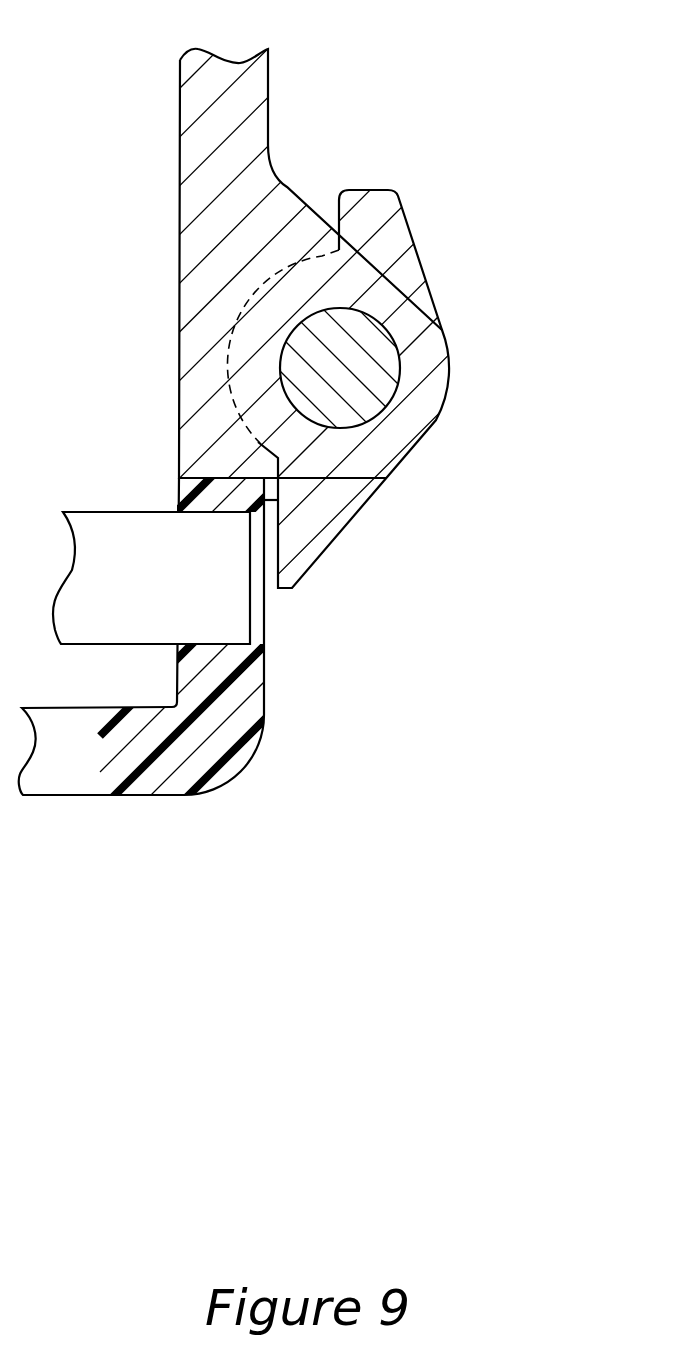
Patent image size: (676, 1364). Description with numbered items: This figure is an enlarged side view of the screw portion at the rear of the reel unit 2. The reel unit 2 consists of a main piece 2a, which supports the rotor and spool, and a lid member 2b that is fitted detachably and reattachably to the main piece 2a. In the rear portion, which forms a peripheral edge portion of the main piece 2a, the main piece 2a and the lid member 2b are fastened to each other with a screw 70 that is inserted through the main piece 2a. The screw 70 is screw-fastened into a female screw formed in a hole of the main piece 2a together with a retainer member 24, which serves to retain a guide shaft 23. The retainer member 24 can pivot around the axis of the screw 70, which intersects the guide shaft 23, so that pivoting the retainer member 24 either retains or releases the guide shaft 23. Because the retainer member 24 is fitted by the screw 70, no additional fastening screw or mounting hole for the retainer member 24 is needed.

The reel unit 2 is at (418, 126).
The main piece 2a is at (228, 693).
The lid member 2b is at (253, 135).
The guide shaft 23 is at (115, 533).
The retainer member 24 is at (388, 243).
The screw 70 is at (357, 390).